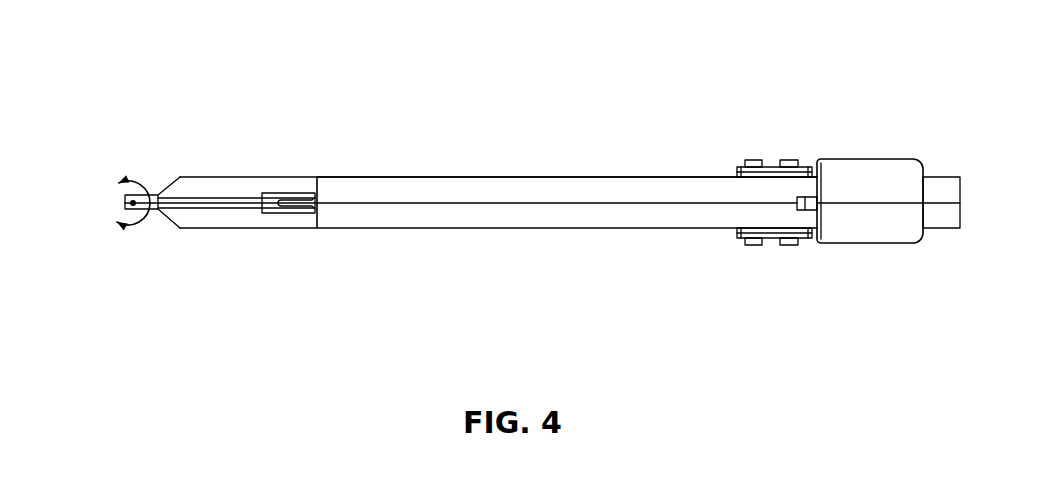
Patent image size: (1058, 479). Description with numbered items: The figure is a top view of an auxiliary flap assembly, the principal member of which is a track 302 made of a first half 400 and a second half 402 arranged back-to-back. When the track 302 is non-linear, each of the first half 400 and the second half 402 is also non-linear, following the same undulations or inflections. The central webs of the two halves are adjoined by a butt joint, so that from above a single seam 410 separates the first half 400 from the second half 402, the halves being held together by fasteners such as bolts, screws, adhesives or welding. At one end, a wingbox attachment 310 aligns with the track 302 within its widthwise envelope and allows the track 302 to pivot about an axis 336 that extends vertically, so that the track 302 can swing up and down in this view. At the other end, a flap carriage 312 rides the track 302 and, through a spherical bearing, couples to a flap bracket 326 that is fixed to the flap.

The track 302 is at (501, 165).
The wingbox attachment 310 is at (143, 198).
The axis 336 is at (131, 203).
The first half 400 is at (440, 215).
The second half 402 is at (480, 190).
The seam 410 is at (560, 203).
The flap carriage 312 is at (775, 133).
The flap bracket 326 is at (870, 175).